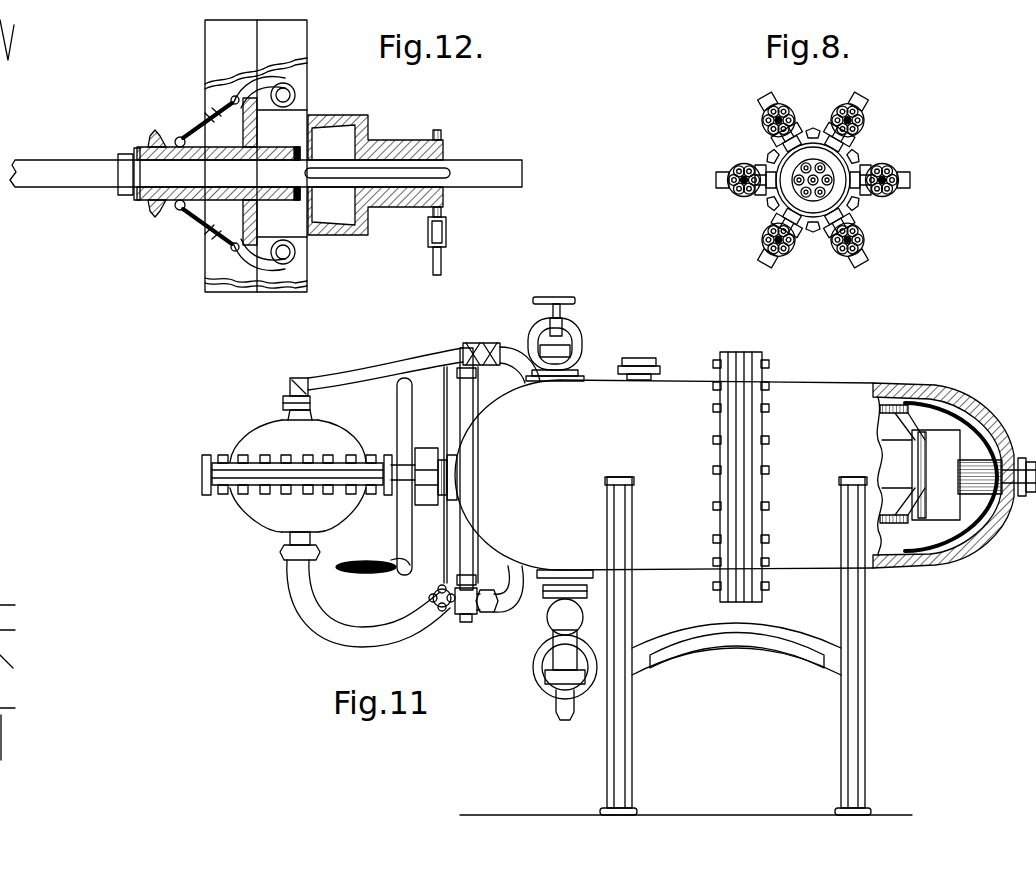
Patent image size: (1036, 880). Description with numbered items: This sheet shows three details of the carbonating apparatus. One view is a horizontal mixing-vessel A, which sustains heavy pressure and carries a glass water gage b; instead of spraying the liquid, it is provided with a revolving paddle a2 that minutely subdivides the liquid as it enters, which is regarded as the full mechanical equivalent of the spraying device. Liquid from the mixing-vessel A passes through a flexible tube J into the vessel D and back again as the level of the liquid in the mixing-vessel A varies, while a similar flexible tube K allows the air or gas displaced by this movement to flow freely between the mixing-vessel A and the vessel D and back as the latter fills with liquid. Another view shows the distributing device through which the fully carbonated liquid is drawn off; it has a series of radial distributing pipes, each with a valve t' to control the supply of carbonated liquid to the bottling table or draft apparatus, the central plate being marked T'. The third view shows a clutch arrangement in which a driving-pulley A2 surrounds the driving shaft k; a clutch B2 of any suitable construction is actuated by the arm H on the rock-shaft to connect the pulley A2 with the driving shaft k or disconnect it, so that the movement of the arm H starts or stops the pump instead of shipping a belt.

In FIG. 12, the driving-pulley A2 is at (217, 54).
In FIG. 12, the driving shaft k is at (90, 168).
In FIG. 12, the clutch B2 is at (312, 122).
In FIG. 12, the arm H is at (447, 251).
In FIG. 8, the tube plate T' is at (832, 180).
In FIG. 8, the valve t' is at (815, 180).
In FIG. 11, the mixing-vessel A is at (745, 475).
In FIG. 11, the revolving paddle a2 is at (906, 475).
In FIG. 11, the glass water gage b is at (460, 399).
In FIG. 11, the flexible tube K is at (386, 370).
In FIG. 11, the vessel D is at (315, 442).
In FIG. 11, the flexible tube J is at (345, 634).